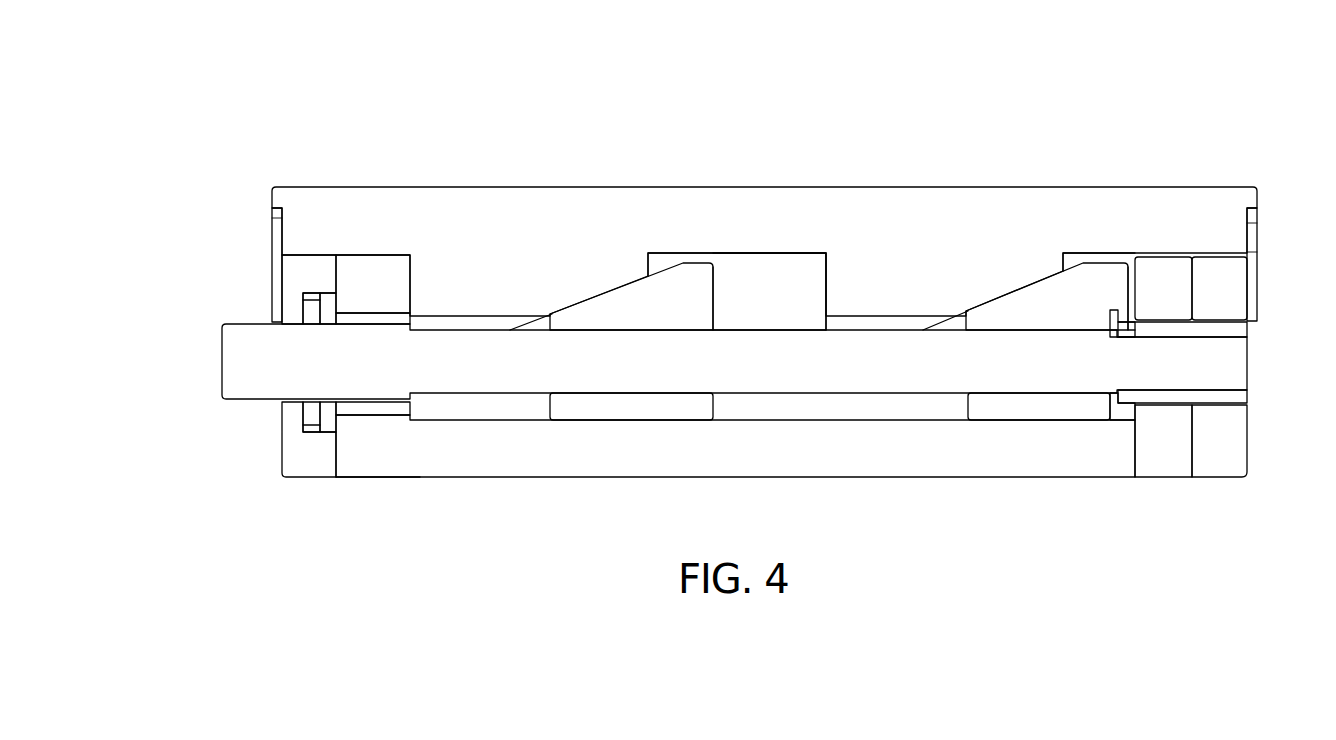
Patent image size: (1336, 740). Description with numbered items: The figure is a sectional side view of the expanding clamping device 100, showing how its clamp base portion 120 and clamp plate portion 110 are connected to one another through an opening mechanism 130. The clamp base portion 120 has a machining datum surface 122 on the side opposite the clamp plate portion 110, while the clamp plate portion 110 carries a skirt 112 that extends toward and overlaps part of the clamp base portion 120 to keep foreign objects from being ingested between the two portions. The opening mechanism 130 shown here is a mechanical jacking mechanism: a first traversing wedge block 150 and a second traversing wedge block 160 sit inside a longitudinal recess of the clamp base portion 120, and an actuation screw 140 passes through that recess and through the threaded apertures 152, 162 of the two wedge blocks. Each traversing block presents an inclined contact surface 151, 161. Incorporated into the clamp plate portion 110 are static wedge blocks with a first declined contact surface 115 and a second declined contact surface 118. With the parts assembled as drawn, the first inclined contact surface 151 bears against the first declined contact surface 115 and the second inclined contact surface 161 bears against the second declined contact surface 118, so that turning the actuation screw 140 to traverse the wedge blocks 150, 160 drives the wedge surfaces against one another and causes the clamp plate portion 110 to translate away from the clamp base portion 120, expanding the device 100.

The expanding clamping device 100 is at (1094, 83).
The clamp plate portion 110 is at (1185, 183).
The skirt 112 is at (1257, 288).
The first declined contact surface 115 is at (927, 322).
The second declined contact surface 118 is at (500, 328).
The clamp base portion 120 is at (1167, 494).
The machining datum surface 122 is at (395, 478).
The opening mechanism 130 is at (201, 330).
The actuation screw 140 is at (222, 362).
The first traversing wedge block 150 is at (656, 333).
The first inclined contact surface 151 is at (667, 270).
The threaded aperture 152 is at (712, 330).
The second traversing wedge block 160 is at (1047, 337).
The second inclined contact surface 161 is at (1082, 264).
The threaded aperture 162 is at (1056, 334).